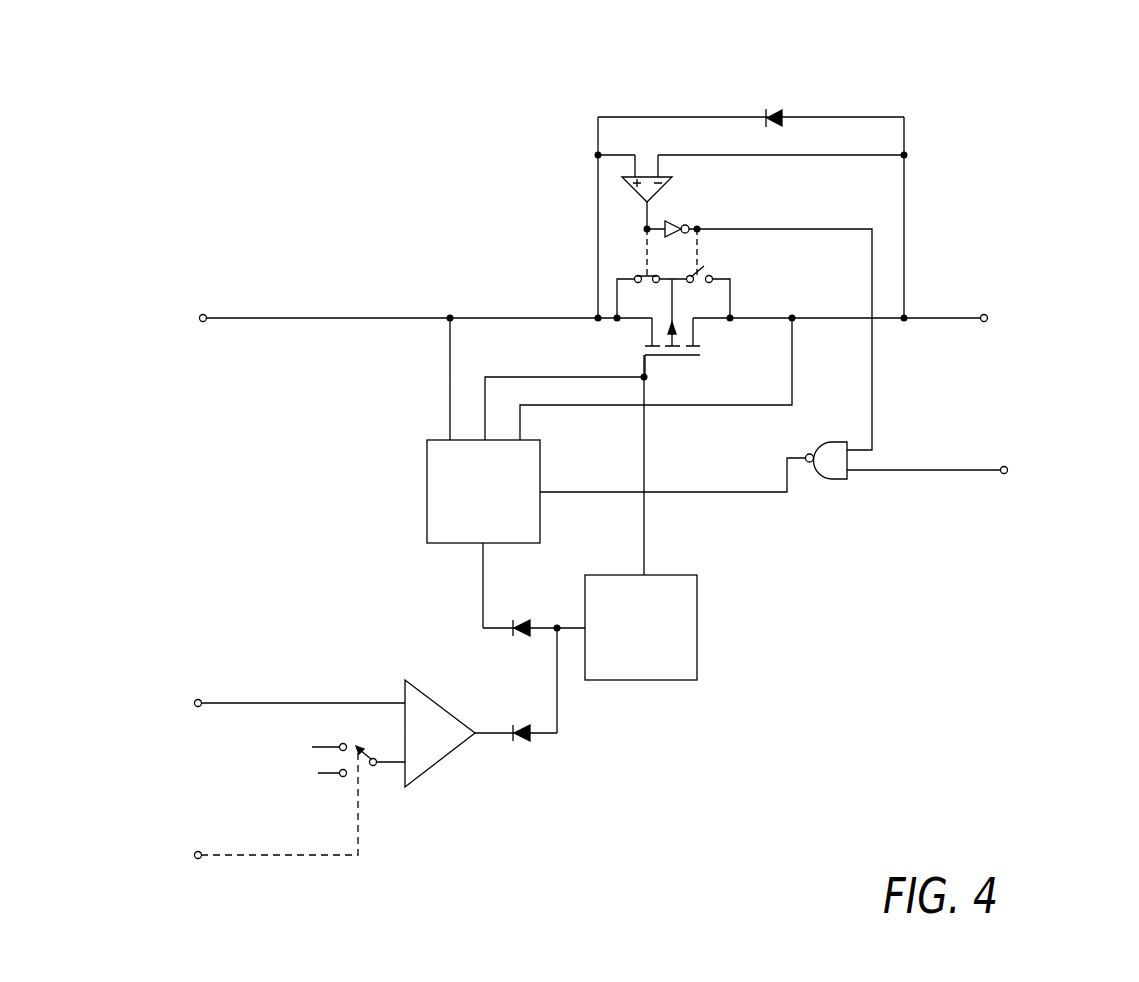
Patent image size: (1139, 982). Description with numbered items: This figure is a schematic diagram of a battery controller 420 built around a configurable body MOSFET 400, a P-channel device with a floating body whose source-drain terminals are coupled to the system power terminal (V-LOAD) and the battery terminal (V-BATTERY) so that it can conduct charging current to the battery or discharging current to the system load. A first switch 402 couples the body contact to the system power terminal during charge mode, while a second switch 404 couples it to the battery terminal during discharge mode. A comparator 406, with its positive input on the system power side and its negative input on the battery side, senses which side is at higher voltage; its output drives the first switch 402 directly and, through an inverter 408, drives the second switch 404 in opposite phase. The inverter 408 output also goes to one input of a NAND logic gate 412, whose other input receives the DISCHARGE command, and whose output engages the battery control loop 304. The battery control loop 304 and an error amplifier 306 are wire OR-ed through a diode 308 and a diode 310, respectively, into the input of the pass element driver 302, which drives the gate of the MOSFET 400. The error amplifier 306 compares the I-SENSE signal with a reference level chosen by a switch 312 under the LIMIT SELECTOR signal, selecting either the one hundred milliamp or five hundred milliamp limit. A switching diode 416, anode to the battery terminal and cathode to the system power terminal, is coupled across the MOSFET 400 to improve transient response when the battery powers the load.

The battery controller 420 is at (457, 76).
The switching diode 416 is at (770, 98).
The comparator 406 is at (674, 189).
The inverter 408 is at (677, 221).
The first switch 402 is at (642, 272).
The second switch 404 is at (716, 271).
The configurable body MOSFET 400 is at (689, 362).
The battery control loop 304 is at (427, 485).
The NAND logic gate 412 is at (832, 480).
The pass element driver 302 is at (697, 625).
The diode 308 is at (518, 640).
The diode 310 is at (520, 750).
The error amplifier 306 is at (443, 698).
The switch 312 is at (366, 769).